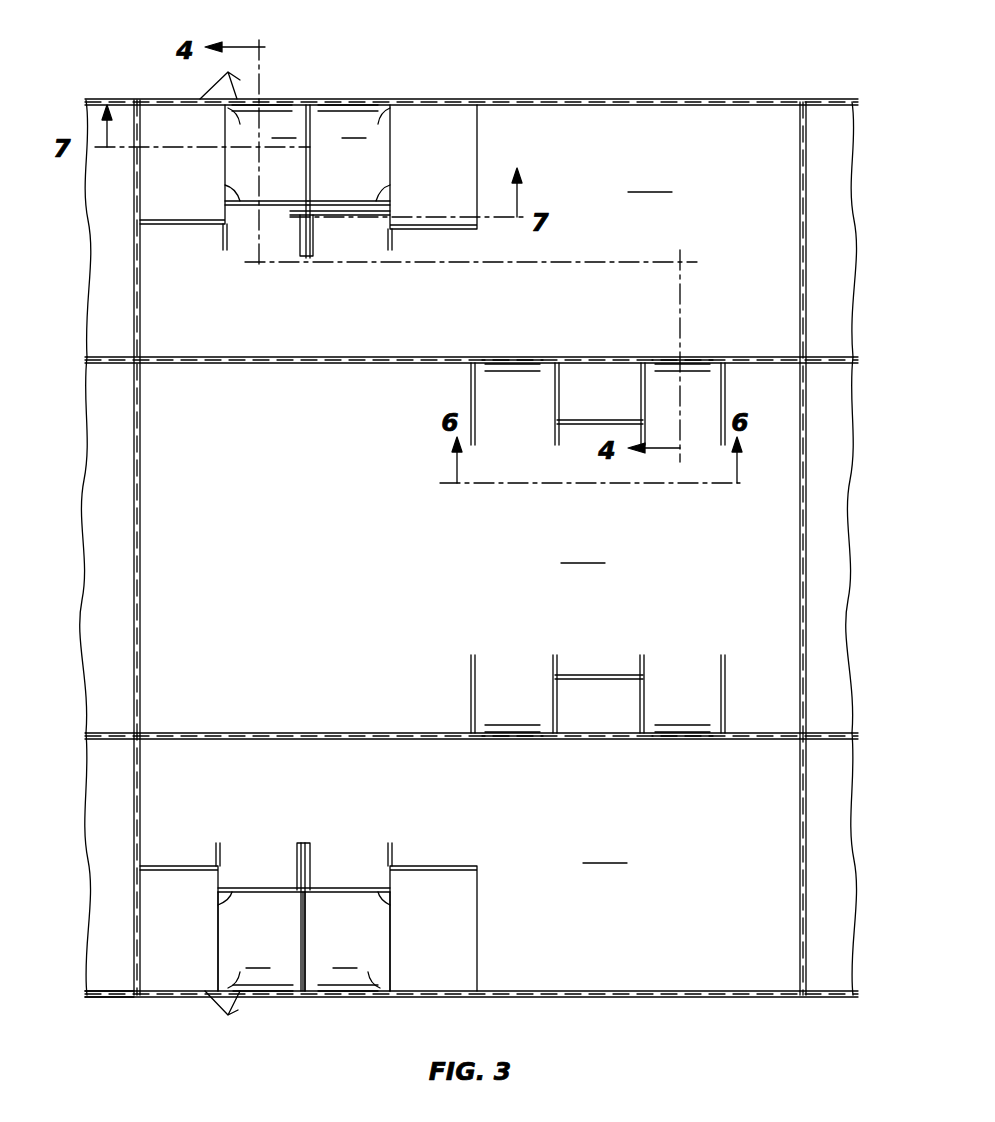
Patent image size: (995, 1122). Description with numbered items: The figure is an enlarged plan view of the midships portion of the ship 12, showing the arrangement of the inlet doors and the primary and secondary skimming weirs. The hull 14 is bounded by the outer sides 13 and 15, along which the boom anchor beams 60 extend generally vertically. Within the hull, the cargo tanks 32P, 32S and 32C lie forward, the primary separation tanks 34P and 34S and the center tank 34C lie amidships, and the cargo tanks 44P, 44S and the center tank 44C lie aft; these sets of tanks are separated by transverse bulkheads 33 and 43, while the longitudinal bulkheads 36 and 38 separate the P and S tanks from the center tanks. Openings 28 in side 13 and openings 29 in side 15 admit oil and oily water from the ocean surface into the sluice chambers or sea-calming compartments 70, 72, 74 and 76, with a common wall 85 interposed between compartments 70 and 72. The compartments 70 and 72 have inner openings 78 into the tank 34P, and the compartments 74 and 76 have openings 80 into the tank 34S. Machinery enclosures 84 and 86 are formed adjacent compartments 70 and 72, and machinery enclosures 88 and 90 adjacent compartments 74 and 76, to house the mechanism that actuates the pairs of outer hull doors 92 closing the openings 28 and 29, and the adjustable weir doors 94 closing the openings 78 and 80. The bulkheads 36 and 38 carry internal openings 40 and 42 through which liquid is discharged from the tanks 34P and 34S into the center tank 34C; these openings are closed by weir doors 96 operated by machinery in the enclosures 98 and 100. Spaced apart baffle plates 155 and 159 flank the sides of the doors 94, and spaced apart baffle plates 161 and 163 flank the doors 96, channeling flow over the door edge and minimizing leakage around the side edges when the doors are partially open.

The ship 12 is at (684, 82).
The side of the hull 13 is at (586, 100).
The hull 14 is at (85, 997).
The side of the hull 15 is at (710, 998).
The opening 28 is at (268, 105).
The opening 29 is at (260, 991).
The cargo tank 32P is at (852, 276).
The cargo tank 32C is at (852, 602).
The cargo tank 32S is at (830, 988).
The transverse bulkhead 33 is at (800, 798).
The primary separation tank 34P is at (650, 182).
The center tank 34C is at (582, 553).
The primary separation tank 34S is at (605, 853).
The longitudinal bulkhead 36 is at (168, 363).
The longitudinal bulkhead 38 is at (290, 733).
The internal opening 40 is at (534, 360).
The internal opening 42 is at (530, 740).
The transverse bulkhead 43 is at (140, 688).
The cargo tank 44P is at (86, 290).
The center tank 44C is at (86, 664).
The cargo tank 44S is at (82, 934).
The boom anchor beam 60 is at (206, 92).
The sluice chamber 70 is at (267, 181).
The sluice chamber 72 is at (349, 159).
The sluice chamber 74 is at (261, 917).
The sluice chamber 76 is at (347, 941).
The inner opening 78 is at (326, 211).
The opening 80 is at (286, 888).
The machinery enclosure 84 is at (172, 224).
The common wall 85 is at (344, 105).
The machinery enclosure 86 is at (450, 232).
The machinery enclosure 88 is at (170, 866).
The machinery enclosure 90 is at (477, 866).
The outer hull door 92 is at (232, 116).
The weir door 94 is at (224, 182).
The weir door 96 is at (504, 362).
The machinery enclosure 98 is at (580, 424).
The machinery enclosure 100 is at (582, 675).
The baffle plate 155 is at (225, 250).
The baffle plate 159 is at (316, 250).
The baffle plate 161 is at (478, 440).
The baffle plate 163 is at (555, 424).